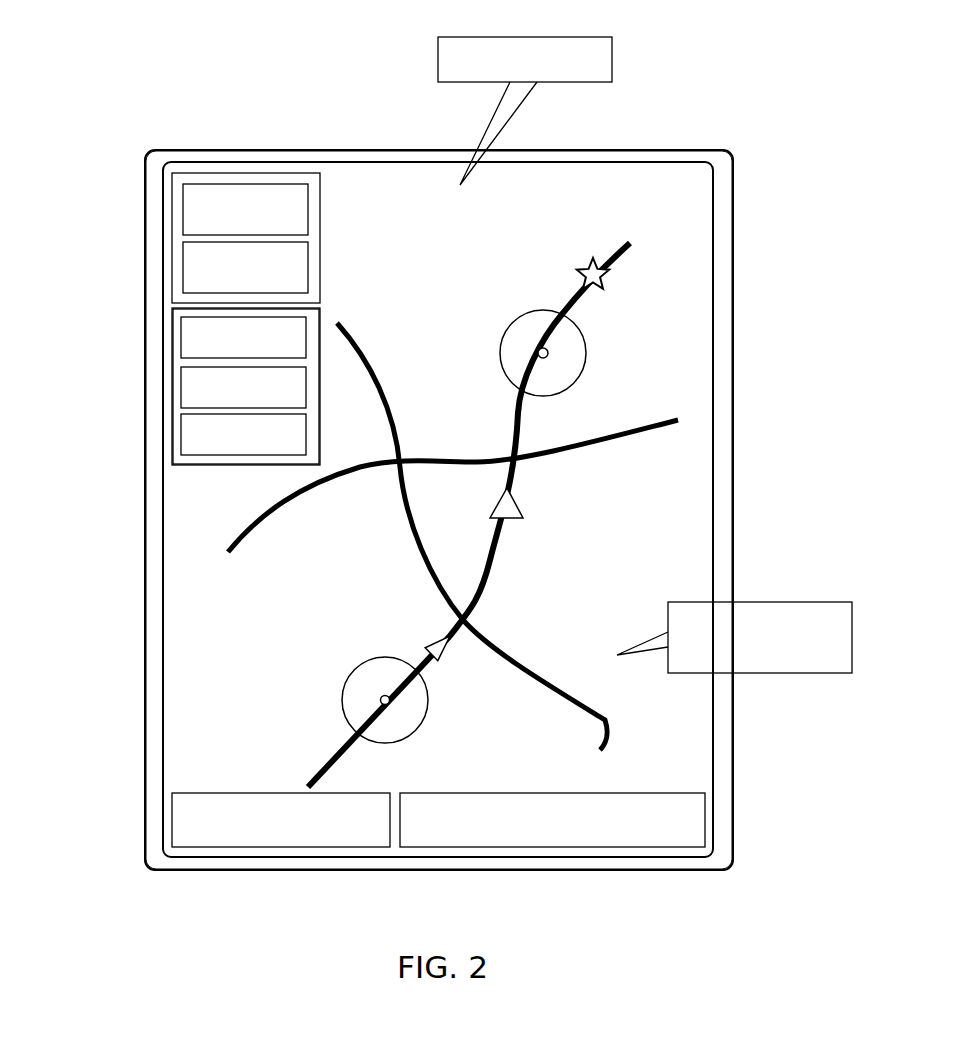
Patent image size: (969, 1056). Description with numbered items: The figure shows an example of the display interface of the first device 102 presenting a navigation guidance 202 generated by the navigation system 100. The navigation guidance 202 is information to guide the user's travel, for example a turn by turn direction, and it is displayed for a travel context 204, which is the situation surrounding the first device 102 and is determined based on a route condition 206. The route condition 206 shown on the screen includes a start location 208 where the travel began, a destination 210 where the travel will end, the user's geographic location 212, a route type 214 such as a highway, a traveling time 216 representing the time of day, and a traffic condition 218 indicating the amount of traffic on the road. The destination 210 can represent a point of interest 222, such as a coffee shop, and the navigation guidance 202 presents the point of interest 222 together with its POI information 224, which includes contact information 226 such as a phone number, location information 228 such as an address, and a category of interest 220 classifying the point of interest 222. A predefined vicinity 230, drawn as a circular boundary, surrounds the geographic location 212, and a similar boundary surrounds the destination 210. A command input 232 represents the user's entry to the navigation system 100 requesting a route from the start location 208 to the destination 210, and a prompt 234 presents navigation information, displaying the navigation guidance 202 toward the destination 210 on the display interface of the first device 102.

The navigation system 100 is at (185, 58).
The first device 102 is at (288, 145).
The travel context 204 is at (658, 155).
The route condition 206 is at (206, 165).
The traveling time 216 is at (198, 202).
The route type 214 is at (192, 267).
The POI information 224 is at (166, 331).
The contact information 226 is at (195, 322).
The location information 228 is at (190, 380).
The category of interest 220 is at (187, 430).
The traffic condition 218 is at (180, 802).
The navigation guidance 202 is at (653, 800).
The command input 232 is at (600, 75).
The prompt 234 is at (772, 647).
The geographic location 212 is at (463, 617).
The start location 208 is at (385, 705).
The predefined vicinity 230 is at (341, 690).
The destination 210 is at (550, 340).
The point of interest 222 is at (517, 503).